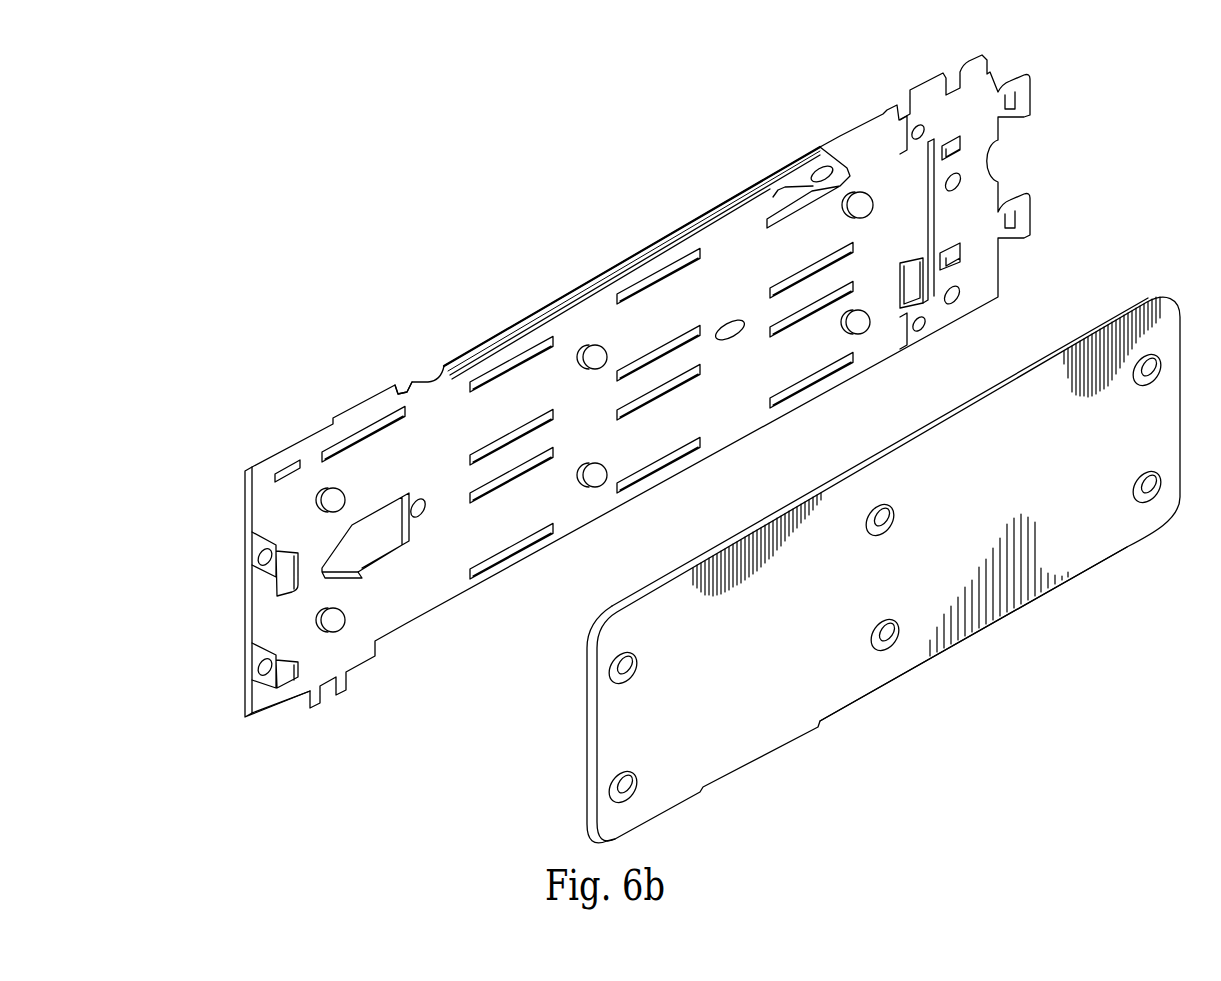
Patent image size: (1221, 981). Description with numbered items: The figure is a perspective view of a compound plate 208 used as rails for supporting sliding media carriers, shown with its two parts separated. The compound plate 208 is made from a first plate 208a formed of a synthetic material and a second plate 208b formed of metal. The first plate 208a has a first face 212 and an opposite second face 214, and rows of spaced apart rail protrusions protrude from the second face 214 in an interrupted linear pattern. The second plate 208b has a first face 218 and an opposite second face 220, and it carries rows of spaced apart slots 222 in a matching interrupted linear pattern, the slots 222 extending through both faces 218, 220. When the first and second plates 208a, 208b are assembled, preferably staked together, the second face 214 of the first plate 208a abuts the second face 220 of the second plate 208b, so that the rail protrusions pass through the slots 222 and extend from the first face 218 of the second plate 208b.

The compound plate 208 is at (592, 386).
The first plate 208a is at (881, 681).
The second plate 208b is at (404, 381).
The first face 212 is at (846, 570).
The second face 214 is at (588, 728).
The first face 218 is at (266, 466).
The second face 220 is at (264, 617).
The slots 222 is at (692, 438).